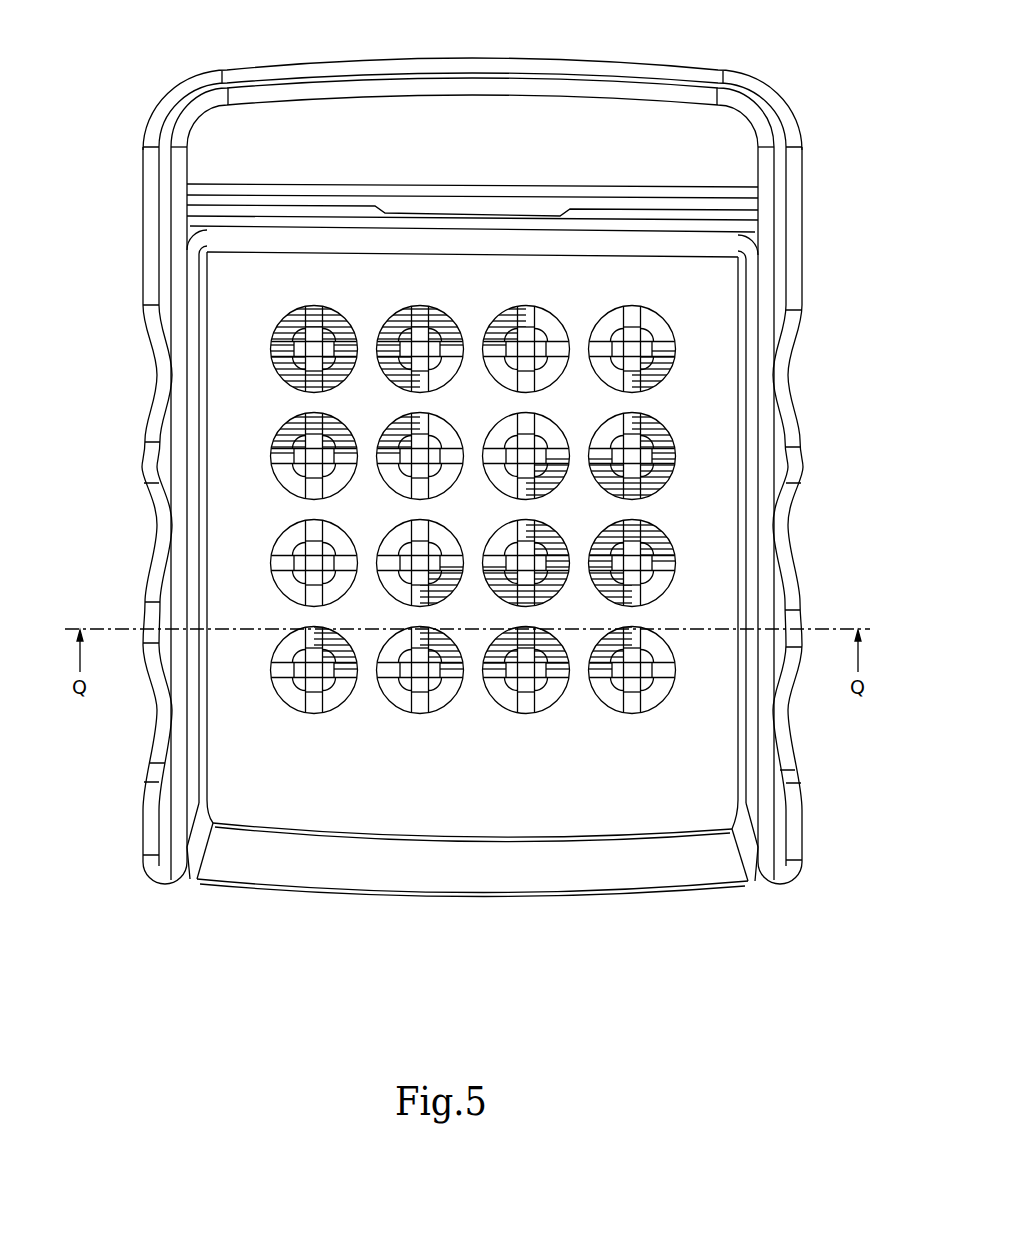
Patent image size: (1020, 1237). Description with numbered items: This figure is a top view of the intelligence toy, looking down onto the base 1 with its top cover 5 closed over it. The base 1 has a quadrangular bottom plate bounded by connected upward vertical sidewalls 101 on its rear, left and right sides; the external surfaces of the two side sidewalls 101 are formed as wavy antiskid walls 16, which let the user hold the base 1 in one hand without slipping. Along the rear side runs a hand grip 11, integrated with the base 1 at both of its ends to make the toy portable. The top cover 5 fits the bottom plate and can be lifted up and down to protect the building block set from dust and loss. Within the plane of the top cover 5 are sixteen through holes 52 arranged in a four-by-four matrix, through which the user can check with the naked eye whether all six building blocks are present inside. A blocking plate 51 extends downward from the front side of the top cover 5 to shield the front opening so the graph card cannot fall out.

The base 1 is at (826, 197).
The hand grip 11 is at (474, 95).
The antiskid wall 16 is at (158, 732).
The sidewall 101 is at (178, 803).
The top cover 5 is at (287, 797).
The blocking plate 51 is at (468, 897).
The through hole 52 is at (282, 477).